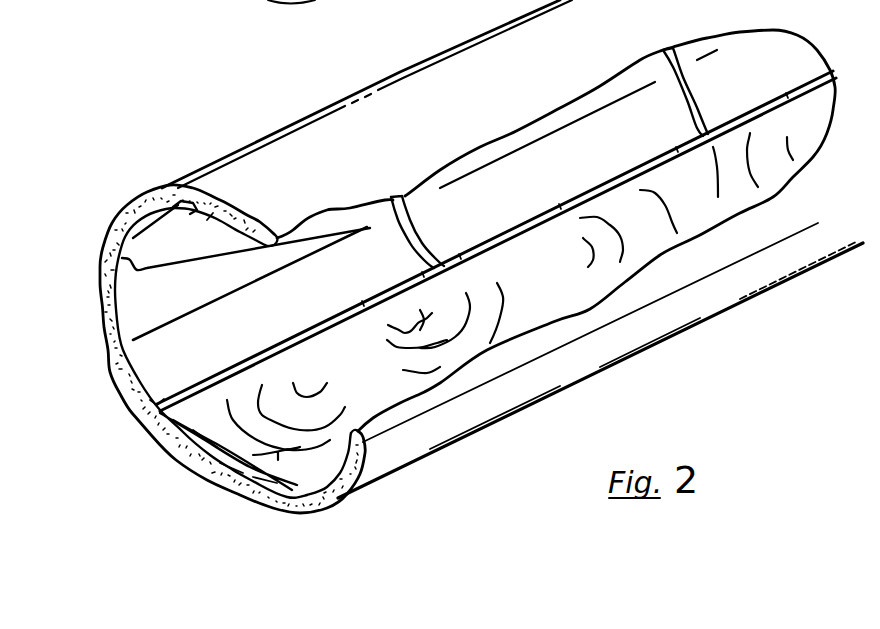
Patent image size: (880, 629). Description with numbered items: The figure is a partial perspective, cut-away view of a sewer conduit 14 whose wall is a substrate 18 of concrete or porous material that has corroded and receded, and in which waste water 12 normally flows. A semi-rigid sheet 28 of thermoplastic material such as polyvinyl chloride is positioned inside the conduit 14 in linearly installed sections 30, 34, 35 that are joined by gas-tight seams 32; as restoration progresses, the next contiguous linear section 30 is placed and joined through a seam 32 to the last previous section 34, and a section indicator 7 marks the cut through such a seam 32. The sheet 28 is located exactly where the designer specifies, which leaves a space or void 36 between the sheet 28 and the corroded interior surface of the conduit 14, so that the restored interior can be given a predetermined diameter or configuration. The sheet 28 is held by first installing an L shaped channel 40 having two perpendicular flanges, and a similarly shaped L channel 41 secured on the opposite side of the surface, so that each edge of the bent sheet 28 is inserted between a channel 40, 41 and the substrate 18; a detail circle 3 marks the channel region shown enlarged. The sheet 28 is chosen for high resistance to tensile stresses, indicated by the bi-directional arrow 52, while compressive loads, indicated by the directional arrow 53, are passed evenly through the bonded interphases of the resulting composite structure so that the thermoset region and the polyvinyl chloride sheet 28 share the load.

The detail view circle 3 is at (205, 365).
The section line 7 is at (362, 222).
The waste water 12 is at (373, 379).
The conduit 14 is at (701, 329).
The substrate 18 is at (327, 503).
The sheet of thermoplastic material 28 is at (246, 249).
The linear section 30 is at (210, 287).
The seam 32 is at (395, 205).
The last previous section 34 is at (557, 152).
The linearly installed section 35 is at (747, 53).
The space or void 36 is at (133, 197).
The L shaped channel 40 is at (293, 337).
The L channel 41 is at (290, 487).
The bi-directional arrow 52 is at (194, 206).
The directional arrow 53 is at (216, 195).